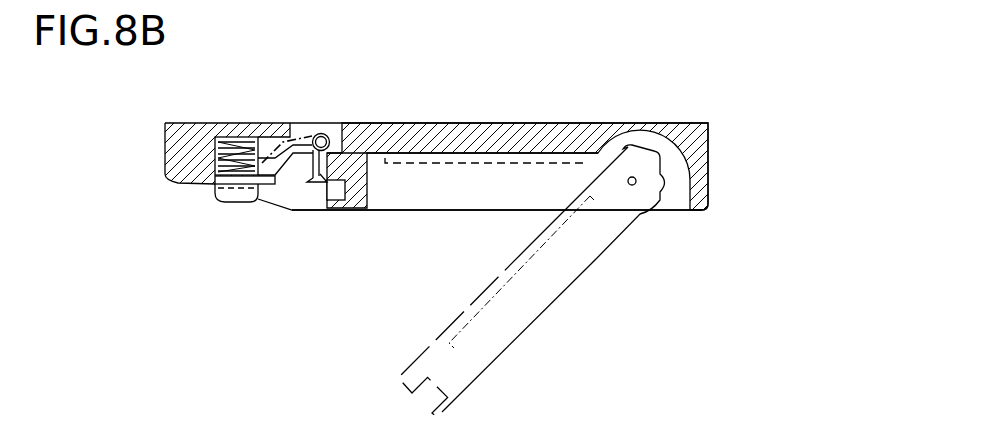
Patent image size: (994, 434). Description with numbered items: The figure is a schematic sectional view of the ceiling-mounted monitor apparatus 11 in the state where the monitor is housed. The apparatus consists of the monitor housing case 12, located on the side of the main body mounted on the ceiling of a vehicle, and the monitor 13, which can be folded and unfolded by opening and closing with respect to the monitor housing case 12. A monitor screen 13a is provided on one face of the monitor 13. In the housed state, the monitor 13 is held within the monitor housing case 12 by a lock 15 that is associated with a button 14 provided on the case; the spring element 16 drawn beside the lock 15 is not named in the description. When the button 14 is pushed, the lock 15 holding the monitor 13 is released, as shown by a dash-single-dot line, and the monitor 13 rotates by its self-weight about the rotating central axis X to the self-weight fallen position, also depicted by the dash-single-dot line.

The ceiling-mounted monitor apparatus 11 is at (637, 83).
The monitor housing case 12 is at (549, 132).
The monitor 13 is at (432, 211).
The monitor screen 13a is at (459, 160).
The button 14 is at (233, 197).
The lock 15 is at (297, 135).
The spring 16 is at (255, 137).
The rotating central axis X is at (633, 177).